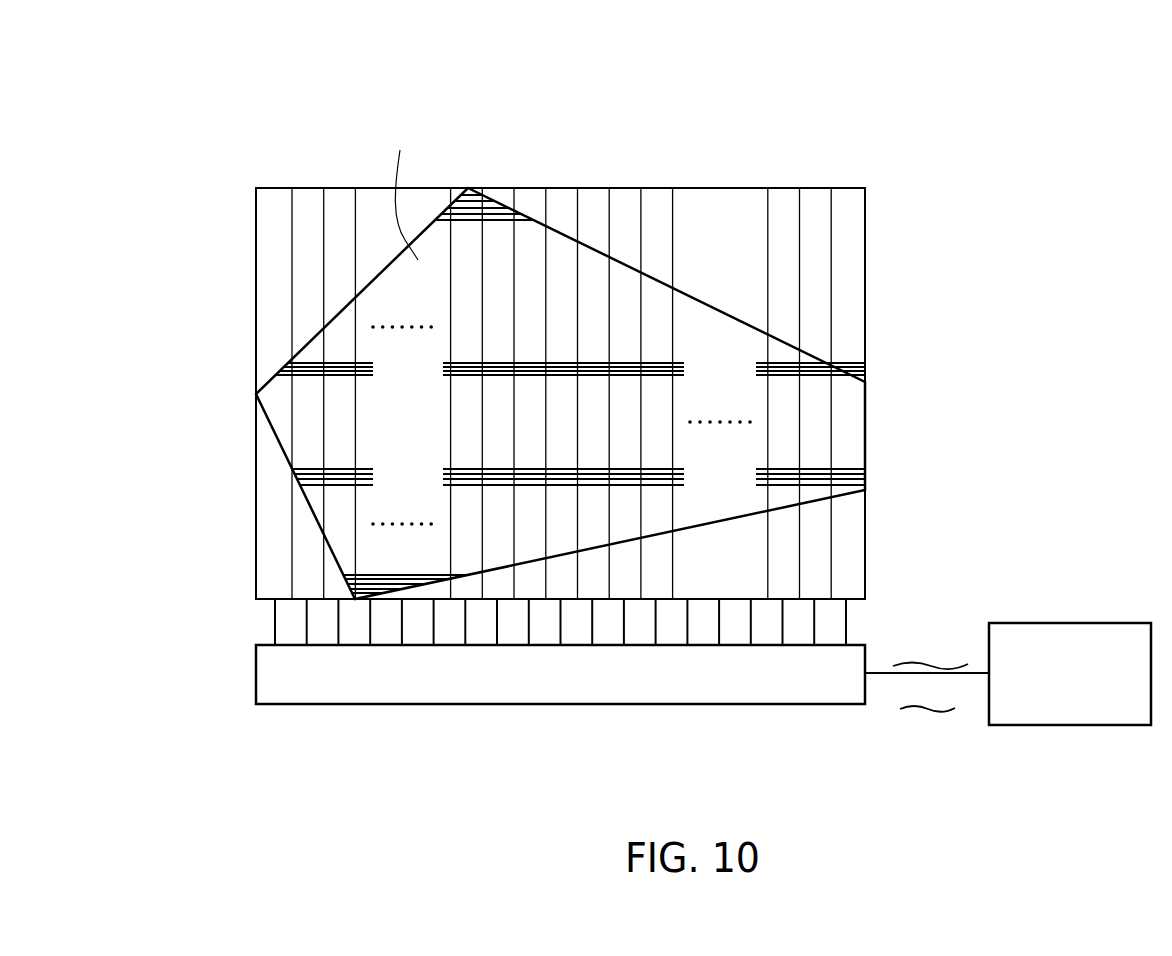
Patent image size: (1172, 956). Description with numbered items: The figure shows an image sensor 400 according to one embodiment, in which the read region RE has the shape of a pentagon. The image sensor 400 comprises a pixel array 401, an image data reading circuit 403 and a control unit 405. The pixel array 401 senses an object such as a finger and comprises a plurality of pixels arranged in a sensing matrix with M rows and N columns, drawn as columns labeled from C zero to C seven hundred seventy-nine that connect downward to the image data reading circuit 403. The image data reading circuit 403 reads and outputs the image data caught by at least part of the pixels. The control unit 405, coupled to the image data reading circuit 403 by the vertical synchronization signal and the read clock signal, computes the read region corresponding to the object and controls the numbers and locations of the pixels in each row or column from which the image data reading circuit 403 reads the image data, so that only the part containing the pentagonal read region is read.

The image sensor 400 is at (1034, 142).
The pixel array 401 is at (717, 187).
The image data reading circuit 403 is at (256, 673).
The control unit 405 is at (1070, 623).